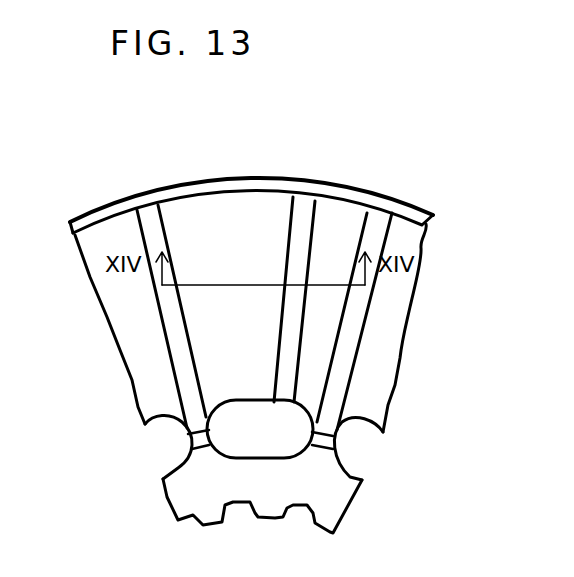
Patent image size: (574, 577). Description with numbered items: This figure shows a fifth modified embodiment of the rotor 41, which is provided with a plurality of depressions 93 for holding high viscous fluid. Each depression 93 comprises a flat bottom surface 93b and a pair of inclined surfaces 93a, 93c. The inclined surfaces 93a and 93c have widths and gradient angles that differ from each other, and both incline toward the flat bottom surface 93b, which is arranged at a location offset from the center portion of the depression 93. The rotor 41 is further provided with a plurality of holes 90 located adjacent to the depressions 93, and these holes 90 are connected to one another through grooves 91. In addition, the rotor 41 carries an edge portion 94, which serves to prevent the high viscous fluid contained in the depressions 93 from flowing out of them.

The rotor 41 is at (333, 493).
The holes 90 is at (290, 414).
The grooves 91 is at (333, 446).
The depressions 93 is at (262, 174).
The inclined surface 93a is at (200, 212).
The flat bottom surface 93b is at (302, 208).
The inclined surface 93c is at (352, 217).
The edge portion 94 is at (88, 215).